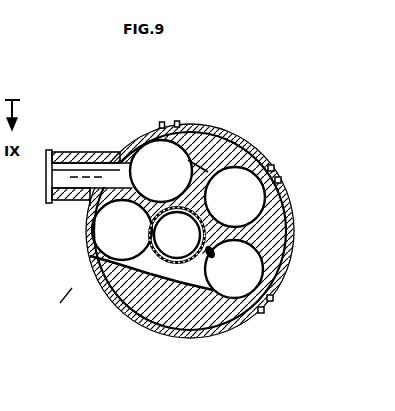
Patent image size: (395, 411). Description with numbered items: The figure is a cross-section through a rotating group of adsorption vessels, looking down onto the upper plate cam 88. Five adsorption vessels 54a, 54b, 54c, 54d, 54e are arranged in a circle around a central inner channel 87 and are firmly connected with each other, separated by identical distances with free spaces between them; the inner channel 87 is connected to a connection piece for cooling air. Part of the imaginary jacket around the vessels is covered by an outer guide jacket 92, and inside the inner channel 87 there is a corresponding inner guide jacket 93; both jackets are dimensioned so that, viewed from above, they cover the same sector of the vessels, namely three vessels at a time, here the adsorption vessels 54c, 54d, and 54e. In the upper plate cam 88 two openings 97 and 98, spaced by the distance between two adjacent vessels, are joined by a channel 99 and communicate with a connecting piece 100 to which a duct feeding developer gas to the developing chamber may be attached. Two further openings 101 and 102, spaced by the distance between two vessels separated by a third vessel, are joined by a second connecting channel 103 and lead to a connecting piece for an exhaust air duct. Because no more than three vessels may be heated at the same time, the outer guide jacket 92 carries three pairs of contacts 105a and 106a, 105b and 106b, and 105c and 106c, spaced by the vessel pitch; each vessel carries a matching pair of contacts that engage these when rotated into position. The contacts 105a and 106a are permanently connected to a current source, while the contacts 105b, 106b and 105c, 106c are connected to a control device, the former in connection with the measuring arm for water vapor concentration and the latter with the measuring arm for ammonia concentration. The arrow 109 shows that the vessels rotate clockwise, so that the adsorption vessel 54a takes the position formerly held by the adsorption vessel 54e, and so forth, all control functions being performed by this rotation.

The adsorption vessel 54a is at (92, 249).
The adsorption vessel 54b is at (147, 333).
The adsorption vessel 54c is at (245, 312).
The adsorption vessel 54d is at (243, 187).
The adsorption vessel 54e is at (180, 160).
The inner channel 87 is at (97, 303).
The plate cam 88 is at (118, 142).
The guide jacket 92 is at (289, 213).
The inner guide jacket 93 is at (204, 322).
The opening 97 is at (154, 162).
The opening 98 is at (250, 158).
The channel 99 is at (213, 134).
The connecting piece 100 is at (47, 150).
The opening 101 is at (100, 226).
The opening 102 is at (248, 262).
The second connecting channel 103 is at (180, 337).
The contact 105a is at (264, 311).
The contact 105b is at (281, 179).
The contact 105c is at (178, 120).
The contact 106a is at (273, 298).
The contact 106b is at (274, 167).
The contact 106c is at (162, 121).
The arrow 109 is at (50, 304).